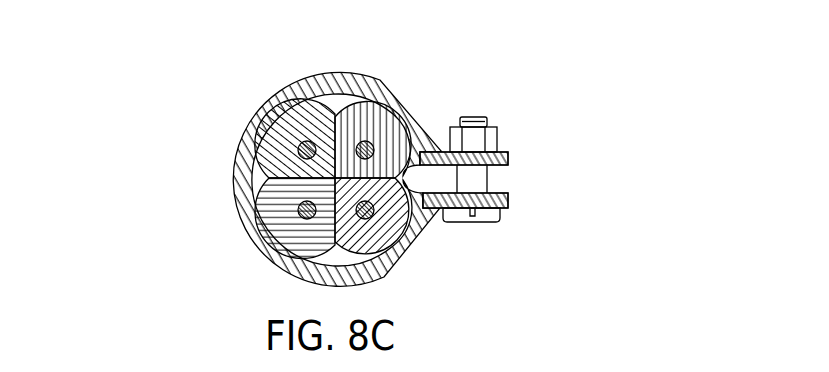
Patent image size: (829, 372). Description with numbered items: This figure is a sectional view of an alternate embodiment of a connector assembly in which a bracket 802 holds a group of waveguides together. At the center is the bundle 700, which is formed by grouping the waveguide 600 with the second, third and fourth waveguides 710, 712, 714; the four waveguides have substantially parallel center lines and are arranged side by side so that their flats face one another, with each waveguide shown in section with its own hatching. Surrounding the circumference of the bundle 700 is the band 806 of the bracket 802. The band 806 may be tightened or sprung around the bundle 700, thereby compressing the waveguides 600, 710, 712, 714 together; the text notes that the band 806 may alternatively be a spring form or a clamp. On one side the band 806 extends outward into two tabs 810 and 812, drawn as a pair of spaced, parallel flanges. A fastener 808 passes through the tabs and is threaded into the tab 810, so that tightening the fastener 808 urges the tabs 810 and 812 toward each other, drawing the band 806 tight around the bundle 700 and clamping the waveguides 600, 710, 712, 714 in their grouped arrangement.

The bundle 700 is at (303, 146).
The second waveguide 710 is at (287, 123).
The third waveguide 712 is at (268, 207).
The fourth waveguide 714 is at (410, 222).
The waveguide 600 is at (350, 117).
The bracket 802 is at (408, 100).
The band 806 is at (421, 123).
The fastener 808 is at (490, 219).
The tab 810 is at (510, 165).
The tab 812 is at (510, 197).